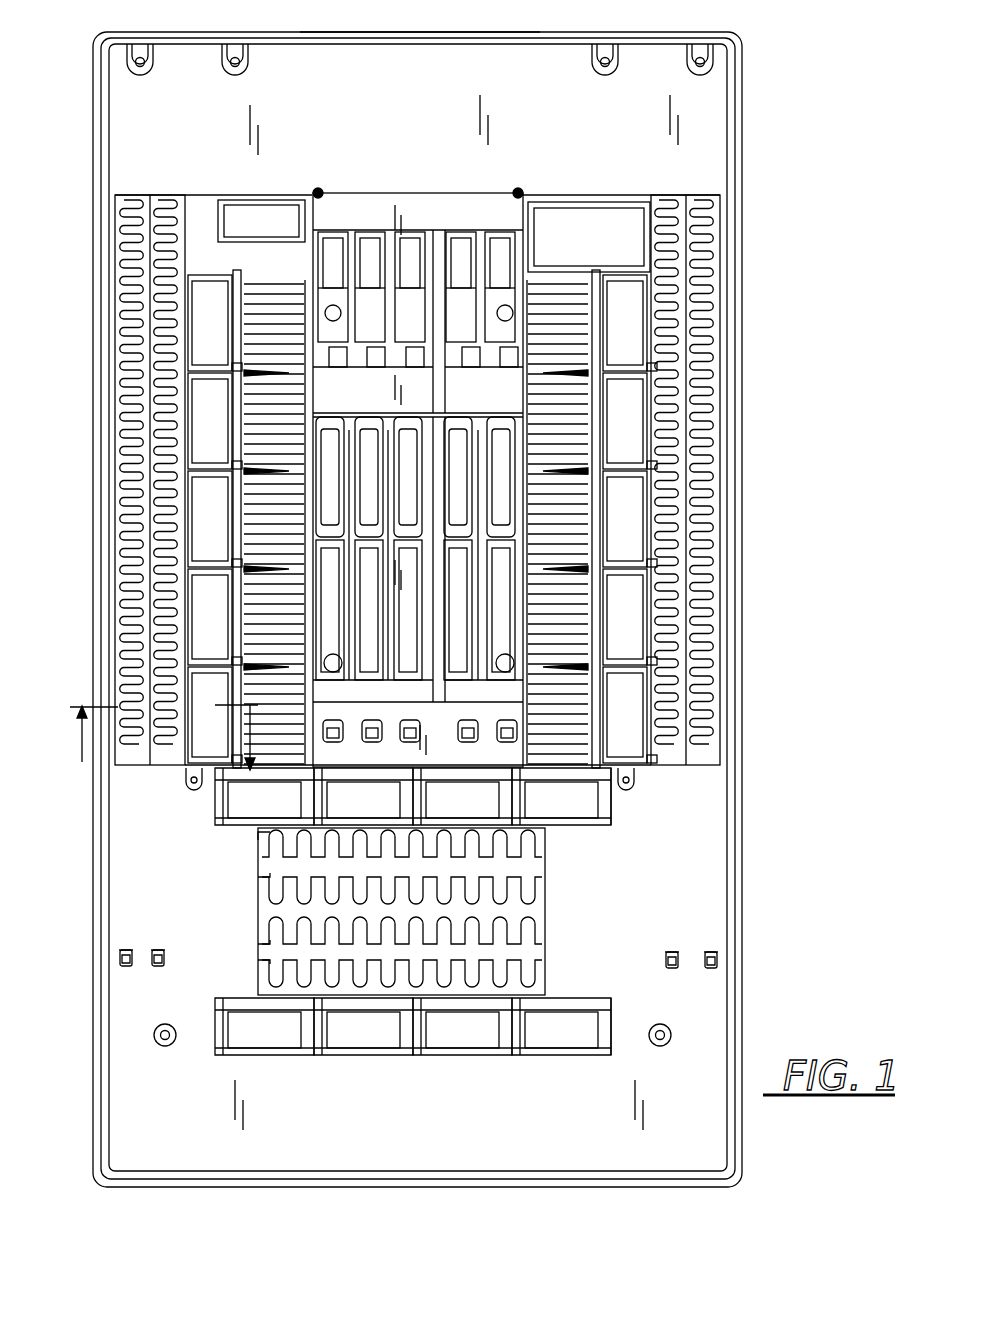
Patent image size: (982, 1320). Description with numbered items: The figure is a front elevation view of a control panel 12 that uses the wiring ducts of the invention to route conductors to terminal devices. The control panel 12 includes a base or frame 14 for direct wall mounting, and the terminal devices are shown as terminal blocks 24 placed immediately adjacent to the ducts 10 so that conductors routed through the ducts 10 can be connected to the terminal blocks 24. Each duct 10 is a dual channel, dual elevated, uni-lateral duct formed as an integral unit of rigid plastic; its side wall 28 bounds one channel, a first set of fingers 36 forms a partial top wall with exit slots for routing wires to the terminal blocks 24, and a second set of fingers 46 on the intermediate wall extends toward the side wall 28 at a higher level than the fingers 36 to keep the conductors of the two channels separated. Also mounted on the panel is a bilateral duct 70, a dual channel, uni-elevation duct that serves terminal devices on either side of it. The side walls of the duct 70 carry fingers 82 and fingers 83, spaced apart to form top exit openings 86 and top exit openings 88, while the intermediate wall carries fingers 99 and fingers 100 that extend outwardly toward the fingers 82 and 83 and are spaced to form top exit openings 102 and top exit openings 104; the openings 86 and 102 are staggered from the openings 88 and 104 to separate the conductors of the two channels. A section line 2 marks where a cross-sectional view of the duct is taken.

The section line 2- 2 is at (160, 737).
The wiring duct 10 is at (112, 222).
The control panel 12 is at (766, 224).
The base or frame 14 is at (516, 2).
The terminal blocks 24 is at (205, 275).
The side wall 28 is at (113, 635).
The first set of fingers 36 is at (165, 548).
The second set of fingers 46 is at (130, 607).
The bilateral duct 70 is at (559, 940).
The fingers 82 is at (262, 860).
The fingers 83 is at (262, 962).
The top exit openings 86 is at (546, 843).
The top exit openings 88 is at (545, 980).
The fingers 99 is at (268, 872).
The fingers 100 is at (262, 950).
The top exit openings 102 is at (540, 897).
The top exit openings 104 is at (516, 928).